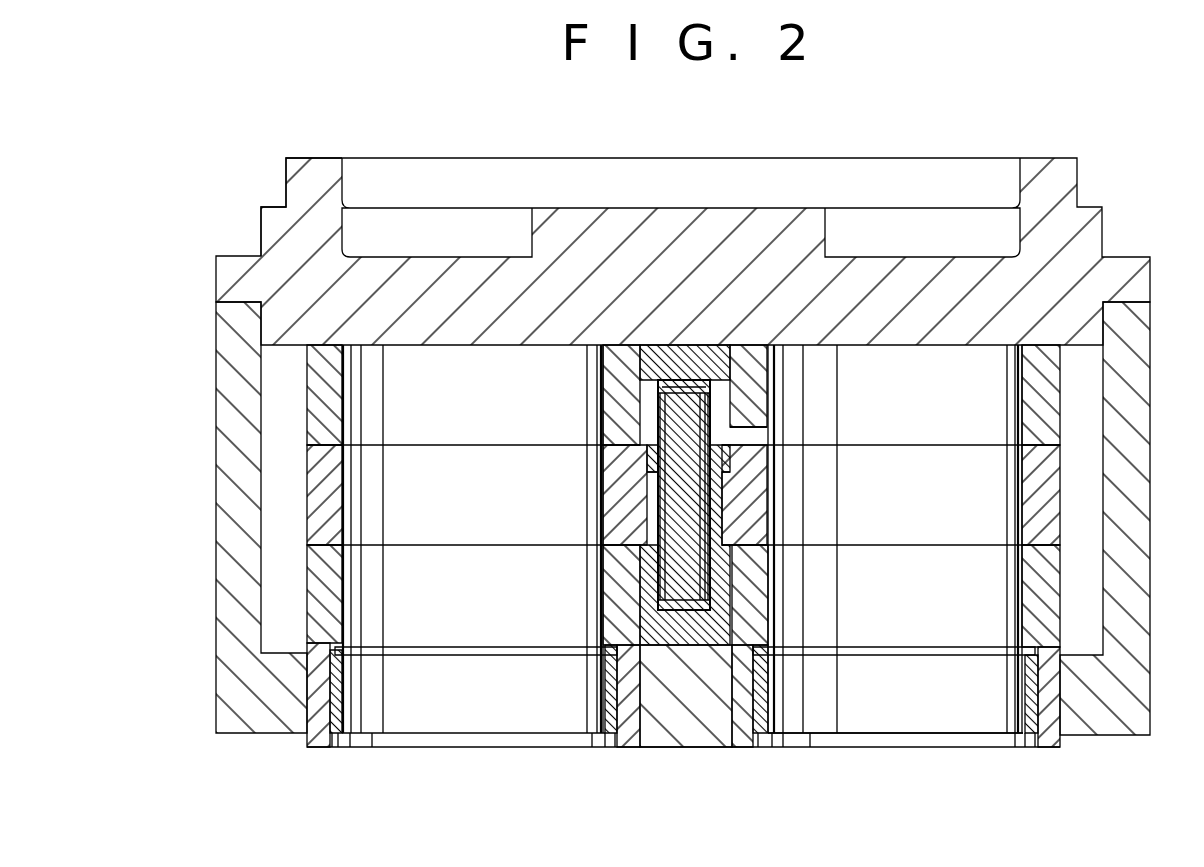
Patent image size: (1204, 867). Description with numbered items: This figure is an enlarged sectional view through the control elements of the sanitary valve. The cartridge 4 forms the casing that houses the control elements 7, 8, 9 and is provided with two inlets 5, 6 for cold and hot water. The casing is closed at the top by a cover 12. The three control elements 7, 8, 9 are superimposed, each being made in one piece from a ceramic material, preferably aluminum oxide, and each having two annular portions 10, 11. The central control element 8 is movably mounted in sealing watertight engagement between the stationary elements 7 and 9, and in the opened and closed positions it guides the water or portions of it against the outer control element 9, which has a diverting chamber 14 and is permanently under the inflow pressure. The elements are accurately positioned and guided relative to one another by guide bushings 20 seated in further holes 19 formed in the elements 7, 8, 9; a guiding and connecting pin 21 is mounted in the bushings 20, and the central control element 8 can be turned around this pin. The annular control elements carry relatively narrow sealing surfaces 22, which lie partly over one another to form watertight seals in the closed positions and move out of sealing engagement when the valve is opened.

The cartridge 4 is at (225, 708).
The inlet 5 is at (513, 713).
The inlet 6 is at (908, 715).
The control element 7 is at (907, 600).
The central control element 8 is at (907, 512).
The outer control element 9 is at (902, 397).
The annular portion 10 is at (330, 392).
The annular portion 11 is at (1040, 362).
The cover 12 is at (272, 232).
The diverting chamber 14 is at (475, 358).
The holes 19 is at (750, 430).
The guide bushing 20 is at (645, 392).
The guiding and connecting pin 21 is at (675, 500).
The sealing surfaces 22 is at (615, 428).